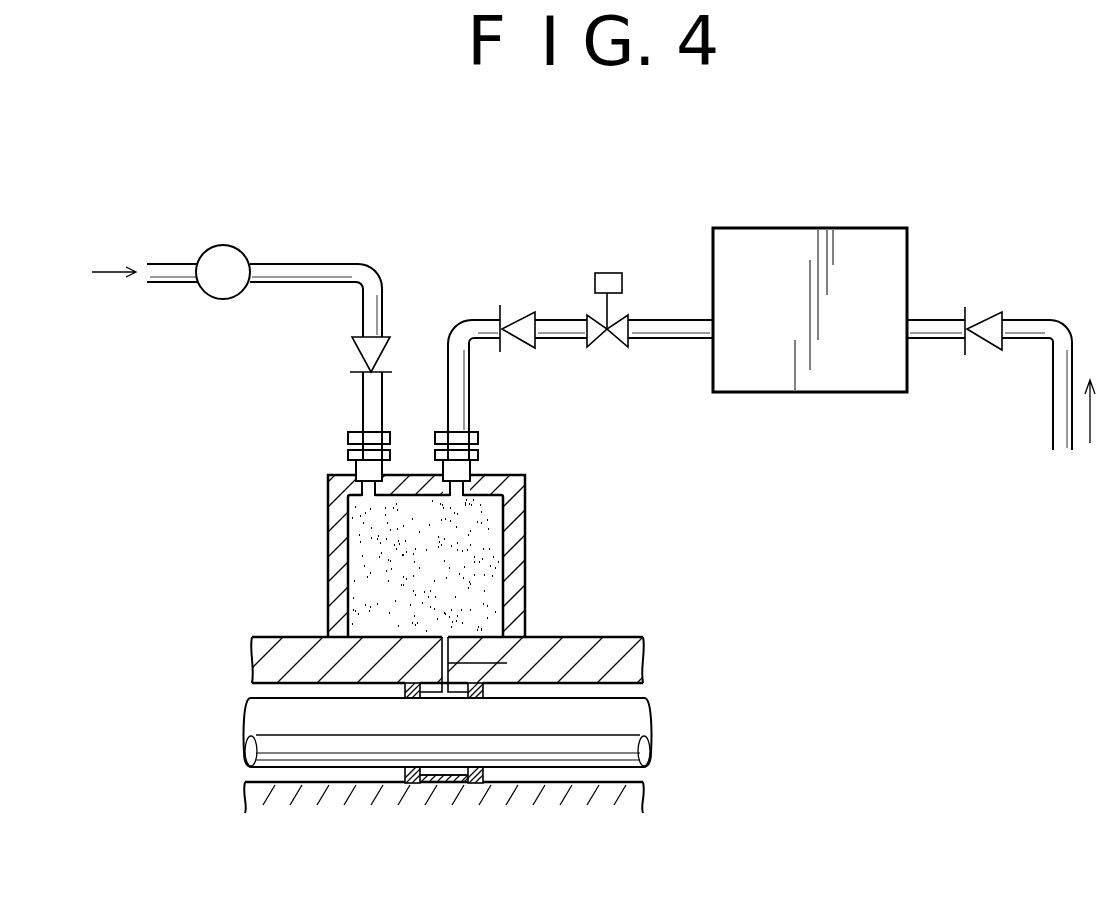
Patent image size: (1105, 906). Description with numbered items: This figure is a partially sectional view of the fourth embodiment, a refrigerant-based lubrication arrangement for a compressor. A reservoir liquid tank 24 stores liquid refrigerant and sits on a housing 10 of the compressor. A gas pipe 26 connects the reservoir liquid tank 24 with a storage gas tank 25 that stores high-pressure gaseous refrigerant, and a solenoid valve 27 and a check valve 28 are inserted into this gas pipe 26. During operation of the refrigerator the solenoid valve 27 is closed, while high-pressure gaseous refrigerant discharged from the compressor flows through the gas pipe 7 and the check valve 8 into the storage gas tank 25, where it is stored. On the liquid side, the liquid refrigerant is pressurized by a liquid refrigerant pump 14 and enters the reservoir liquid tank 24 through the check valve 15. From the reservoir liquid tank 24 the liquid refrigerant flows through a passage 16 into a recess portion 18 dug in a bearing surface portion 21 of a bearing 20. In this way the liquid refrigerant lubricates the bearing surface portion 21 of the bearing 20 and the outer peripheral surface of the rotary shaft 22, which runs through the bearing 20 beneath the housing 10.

The gas pipe 7 is at (1033, 321).
The check valve 8 is at (995, 312).
The housing 10 is at (623, 637).
The liquid refrigerant pump 14 is at (240, 247).
The check valve 15 is at (352, 344).
The passage 16 is at (495, 658).
The recess portion 18 is at (432, 770).
The bearing 20 is at (425, 783).
The bearing surface portion 21 is at (455, 698).
The rotary shaft 22 is at (648, 720).
The reservoir liquid tank 24 is at (408, 553).
The storage gas tank 25 is at (828, 228).
The gas pipe 26 is at (565, 339).
The solenoid valve 27 is at (613, 273).
The check valve 28 is at (528, 312).